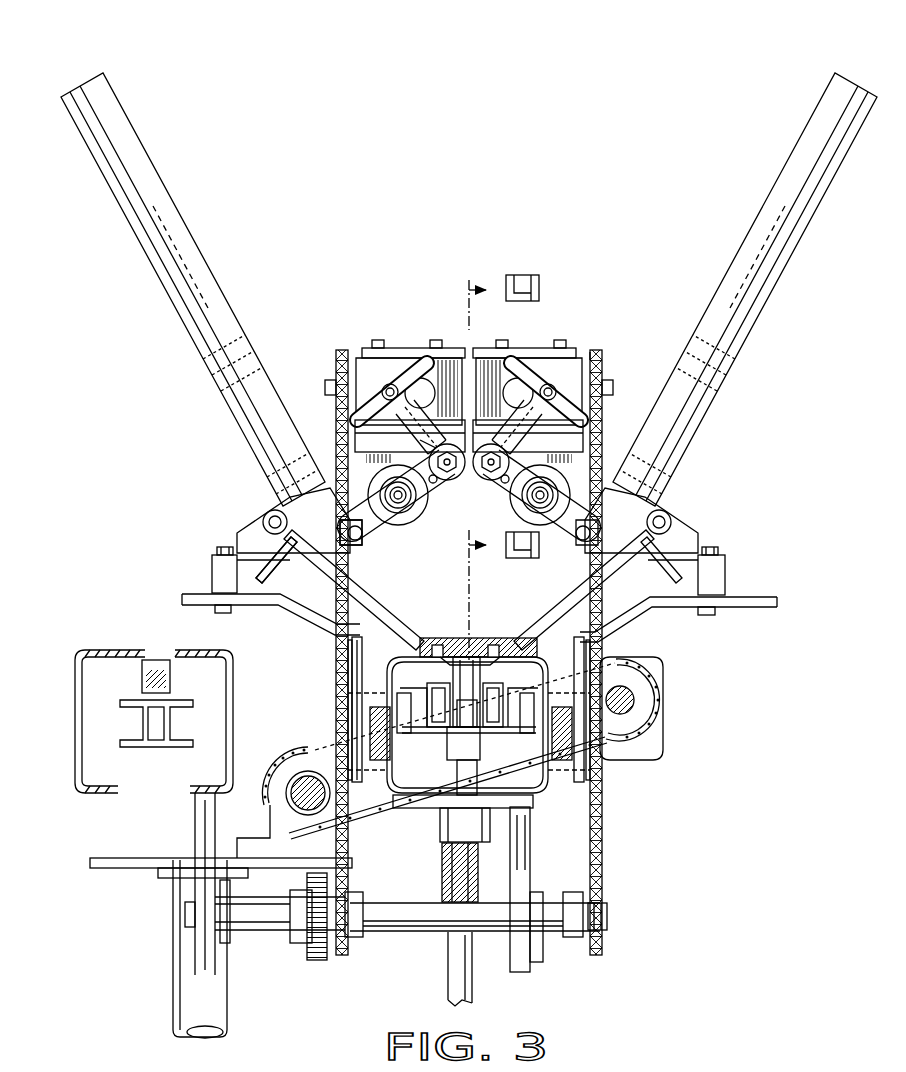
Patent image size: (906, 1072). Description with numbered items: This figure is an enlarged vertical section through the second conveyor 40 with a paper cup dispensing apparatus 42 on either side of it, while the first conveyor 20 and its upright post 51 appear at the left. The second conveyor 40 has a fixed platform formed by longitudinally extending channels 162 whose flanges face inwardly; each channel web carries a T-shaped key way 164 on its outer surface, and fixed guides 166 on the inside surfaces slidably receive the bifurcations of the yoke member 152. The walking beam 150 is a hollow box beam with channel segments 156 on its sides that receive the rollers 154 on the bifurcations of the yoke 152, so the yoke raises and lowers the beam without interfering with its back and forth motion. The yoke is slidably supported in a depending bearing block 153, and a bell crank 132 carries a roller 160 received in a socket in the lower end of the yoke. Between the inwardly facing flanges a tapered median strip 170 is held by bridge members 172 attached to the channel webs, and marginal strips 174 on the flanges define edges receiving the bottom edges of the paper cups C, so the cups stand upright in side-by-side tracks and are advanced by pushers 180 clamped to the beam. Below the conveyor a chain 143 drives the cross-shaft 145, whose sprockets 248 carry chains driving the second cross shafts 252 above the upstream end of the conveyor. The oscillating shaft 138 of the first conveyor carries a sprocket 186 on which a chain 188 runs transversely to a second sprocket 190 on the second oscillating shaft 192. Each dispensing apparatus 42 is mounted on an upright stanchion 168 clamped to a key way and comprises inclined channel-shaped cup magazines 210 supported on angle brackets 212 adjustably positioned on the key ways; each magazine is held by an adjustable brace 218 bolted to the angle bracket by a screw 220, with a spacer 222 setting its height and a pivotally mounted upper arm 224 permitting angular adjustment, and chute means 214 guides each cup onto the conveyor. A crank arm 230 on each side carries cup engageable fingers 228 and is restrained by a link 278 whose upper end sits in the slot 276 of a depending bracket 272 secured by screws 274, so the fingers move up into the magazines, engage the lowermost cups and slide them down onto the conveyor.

The first conveyor 20 is at (113, 626).
The second conveyor 40 is at (440, 575).
The article dispensing apparatus 42 is at (316, 322).
The upright post 51 is at (173, 978).
The bell crank 132 is at (442, 872).
The oscillating shaft 138 is at (325, 748).
The chain 143 is at (306, 960).
The cross-shaft 145 is at (436, 931).
The walking beam 150 is at (463, 727).
The yoke member 152 is at (402, 753).
The bearing block 153 is at (445, 828).
The rollers 154 is at (440, 692).
The channel segments 156 is at (480, 692).
The roller 160 is at (486, 872).
The channels 162 is at (355, 658).
The T-shaped key way 164 is at (372, 715).
The fixed guides 166 is at (350, 678).
The upright stanchion 168 is at (352, 639).
The median strip 170 is at (466, 640).
The bridge members 172 is at (437, 640).
The marginal strips 174 is at (390, 623).
The pushers 180 is at (497, 643).
The sprocket 186 is at (372, 812).
The chain 188 is at (320, 757).
The second sprocket 190 is at (652, 700).
The second oscillating shaft 192 is at (634, 695).
The cup magazines 210 is at (262, 459).
The angle brackets 212 is at (190, 594).
The chute means 214 is at (340, 550).
The adjustable brace 218 is at (249, 528).
The screw 220 is at (224, 546).
The spacer 222 is at (213, 575).
The upper arm 224 is at (273, 510).
The cup engageable finger 228 is at (277, 567).
The crank arm 230 is at (440, 494).
The sprockets 248 is at (352, 938).
The second cross shafts 252 is at (328, 385).
The depending bracket 272 is at (340, 358).
The screws 274 is at (382, 342).
The slot 276 is at (600, 352).
The link 278 is at (433, 482).
The paper cups C is at (499, 467).